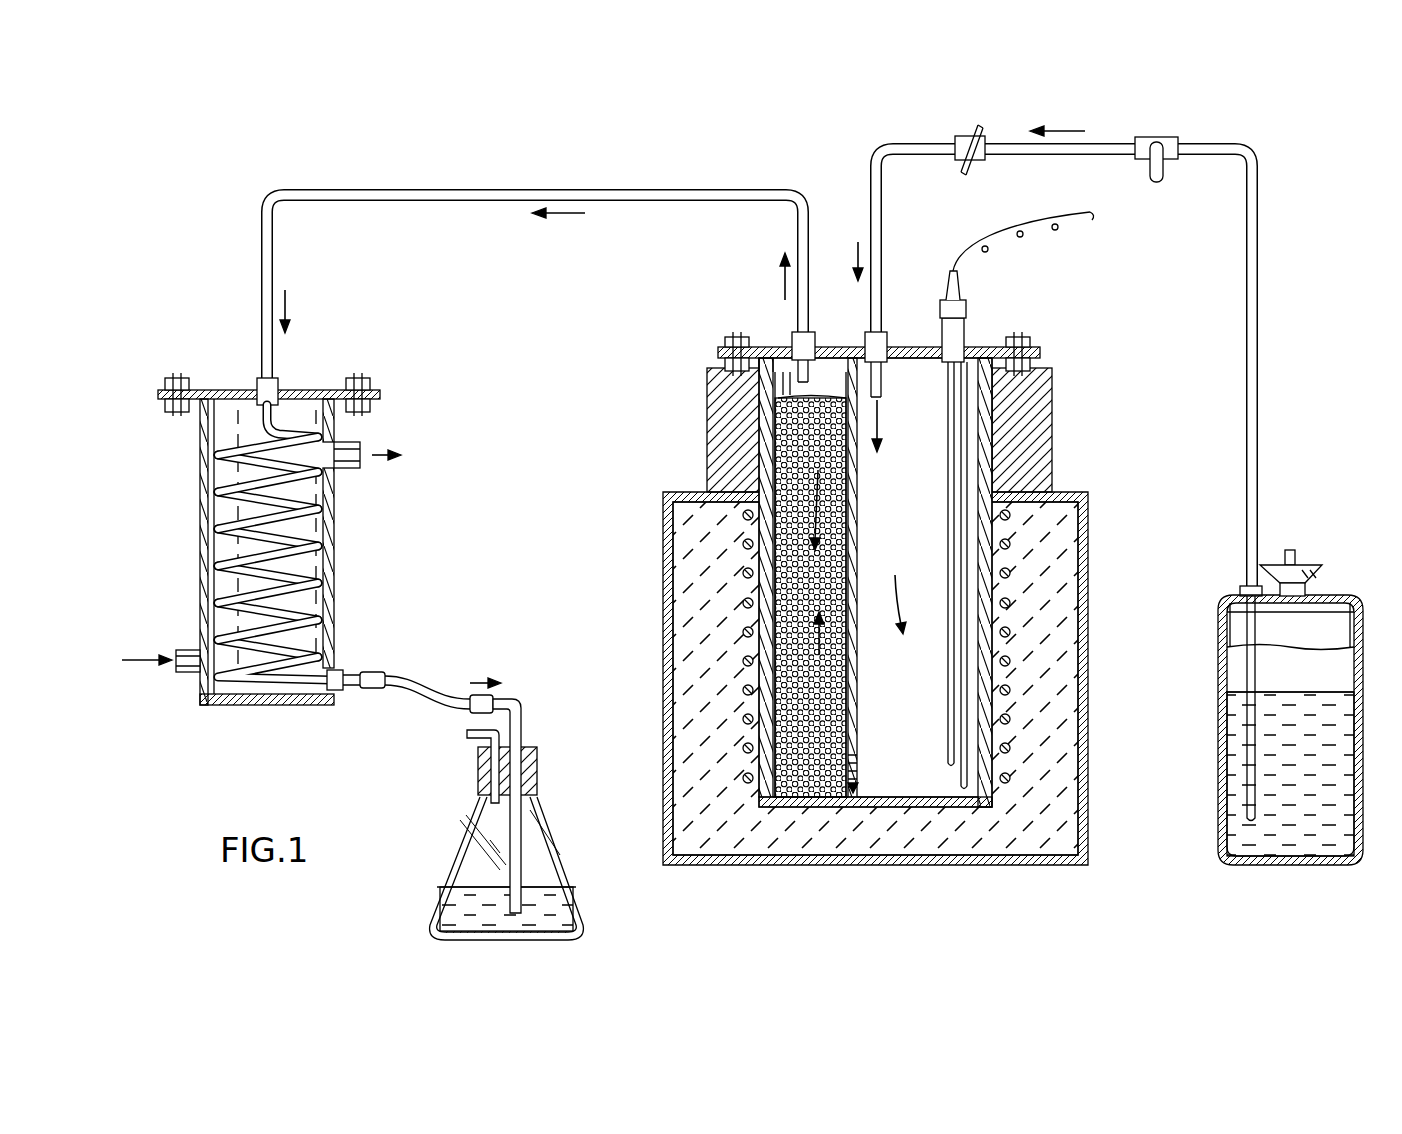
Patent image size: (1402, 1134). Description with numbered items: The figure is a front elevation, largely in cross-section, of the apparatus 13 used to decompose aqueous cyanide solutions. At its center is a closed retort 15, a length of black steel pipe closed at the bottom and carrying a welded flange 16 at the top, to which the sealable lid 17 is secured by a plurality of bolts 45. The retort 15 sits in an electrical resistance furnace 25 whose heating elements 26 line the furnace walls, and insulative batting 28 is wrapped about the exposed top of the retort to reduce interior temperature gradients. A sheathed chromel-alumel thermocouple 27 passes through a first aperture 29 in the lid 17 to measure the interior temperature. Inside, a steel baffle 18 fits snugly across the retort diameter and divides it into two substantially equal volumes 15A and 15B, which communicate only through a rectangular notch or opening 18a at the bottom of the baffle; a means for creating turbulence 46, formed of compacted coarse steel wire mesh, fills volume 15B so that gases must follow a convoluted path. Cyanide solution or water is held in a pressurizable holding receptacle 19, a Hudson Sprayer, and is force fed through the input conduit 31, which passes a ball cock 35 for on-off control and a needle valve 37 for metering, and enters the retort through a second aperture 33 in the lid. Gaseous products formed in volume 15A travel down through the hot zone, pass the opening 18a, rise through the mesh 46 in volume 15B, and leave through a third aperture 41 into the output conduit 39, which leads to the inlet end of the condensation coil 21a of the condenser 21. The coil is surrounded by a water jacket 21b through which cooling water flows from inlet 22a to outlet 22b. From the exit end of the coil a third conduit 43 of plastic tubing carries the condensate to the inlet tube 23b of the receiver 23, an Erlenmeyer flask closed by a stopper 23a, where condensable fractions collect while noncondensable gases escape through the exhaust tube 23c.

The apparatus 13 is at (450, 140).
The closed retort 15 is at (986, 803).
The retort volume 15A is at (910, 776).
The retort volume 15B is at (815, 780).
The flange 16 is at (1055, 360).
The sealable lid 17 is at (775, 345).
The steel baffle 18 is at (857, 548).
The notch or opening 18a is at (852, 762).
The holding receptacle 19 is at (1222, 712).
The condenser 21 is at (270, 539).
The condensation coil 21a is at (318, 578).
The water jacket 21b is at (337, 530).
The inlet 22a is at (141, 660).
The outlet 22b is at (396, 455).
The receiver 23 is at (505, 800).
The stopper 23a is at (531, 745).
The inlet tube 23b is at (521, 704).
The exhaust tube 23c is at (467, 735).
The electrical resistance furnace 25 is at (745, 866).
The heating elements 26 is at (1011, 516).
The thermocouple 27 is at (947, 500).
The insulative batting 28 is at (707, 412).
The first aperture 29 is at (966, 345).
The input conduit 31 is at (884, 247).
The second aperture 33 is at (893, 345).
The ball cock 35 is at (1175, 136).
The needle valve 37 is at (985, 135).
The output conduit 39 is at (727, 189).
The third aperture 41 is at (812, 340).
The third conduit 43 is at (418, 676).
The bolts 45 is at (1026, 338).
The means for creating turbulence 46 is at (832, 680).